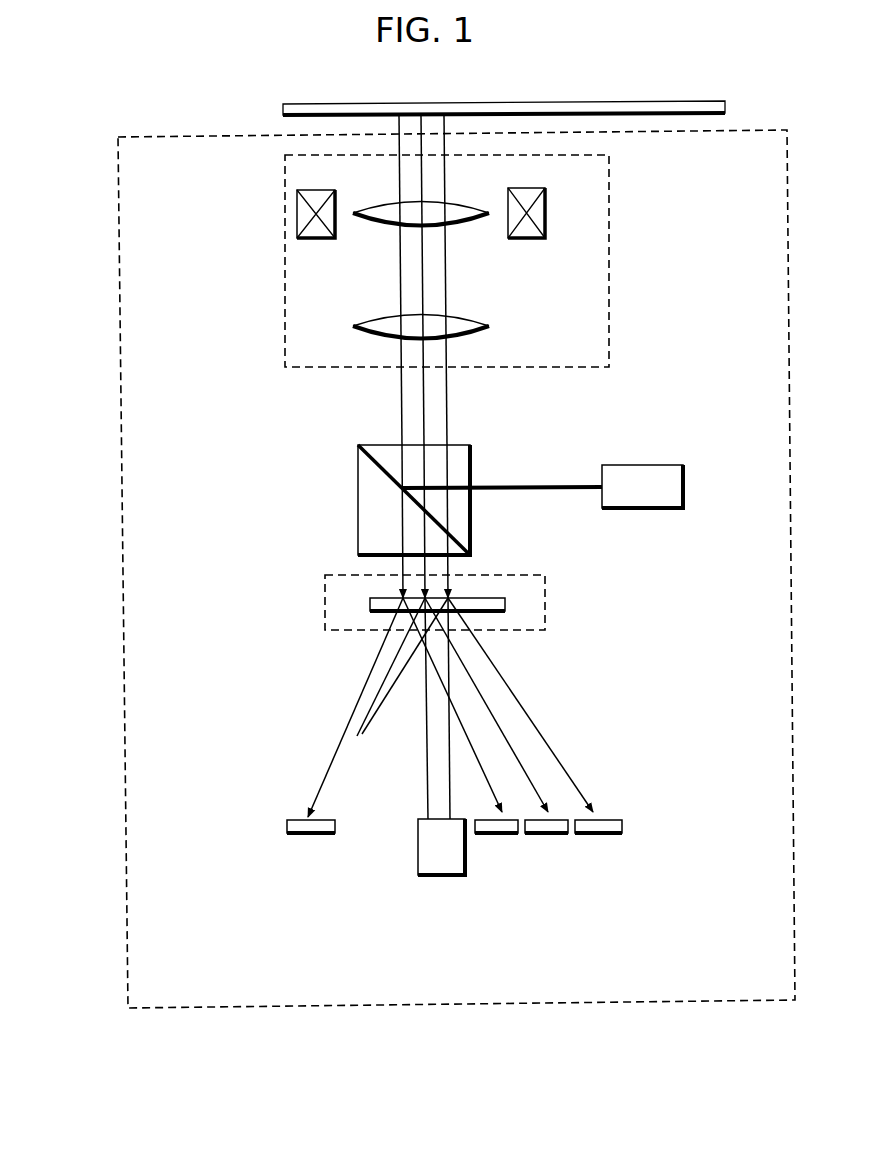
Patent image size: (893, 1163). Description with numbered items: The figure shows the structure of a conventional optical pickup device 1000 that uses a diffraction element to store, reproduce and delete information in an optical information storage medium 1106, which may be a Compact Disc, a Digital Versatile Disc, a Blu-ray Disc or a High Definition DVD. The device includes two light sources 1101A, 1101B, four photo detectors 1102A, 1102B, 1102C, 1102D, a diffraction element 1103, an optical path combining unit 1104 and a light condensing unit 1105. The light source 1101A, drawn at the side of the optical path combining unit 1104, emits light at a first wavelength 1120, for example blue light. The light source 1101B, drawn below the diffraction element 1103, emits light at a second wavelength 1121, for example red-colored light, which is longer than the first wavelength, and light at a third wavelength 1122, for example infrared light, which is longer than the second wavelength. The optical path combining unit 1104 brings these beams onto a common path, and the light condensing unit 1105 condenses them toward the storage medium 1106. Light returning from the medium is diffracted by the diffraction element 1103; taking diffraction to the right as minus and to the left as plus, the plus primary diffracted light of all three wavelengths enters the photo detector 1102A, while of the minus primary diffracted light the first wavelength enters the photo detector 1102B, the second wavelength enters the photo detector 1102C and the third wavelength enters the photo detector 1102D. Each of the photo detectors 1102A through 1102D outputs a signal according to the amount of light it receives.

The optical pickup device 1000 is at (121, 437).
The optical information storage medium 1106 is at (283, 112).
The light condensing unit 1105 is at (302, 302).
The optical path combining unit 1104 is at (383, 471).
The light at a first wavelength 1120 is at (504, 483).
The light source 1101A is at (640, 477).
The light at a second wavelength 1121 is at (427, 532).
The light at a third wavelength 1122 is at (448, 563).
The diffraction element 1103 is at (337, 592).
The photo detector 1102A is at (310, 836).
The photo detector 1102B is at (495, 836).
The photo detector 1102C is at (545, 836).
The photo detector 1102D is at (598, 836).
The light source 1101B is at (443, 878).